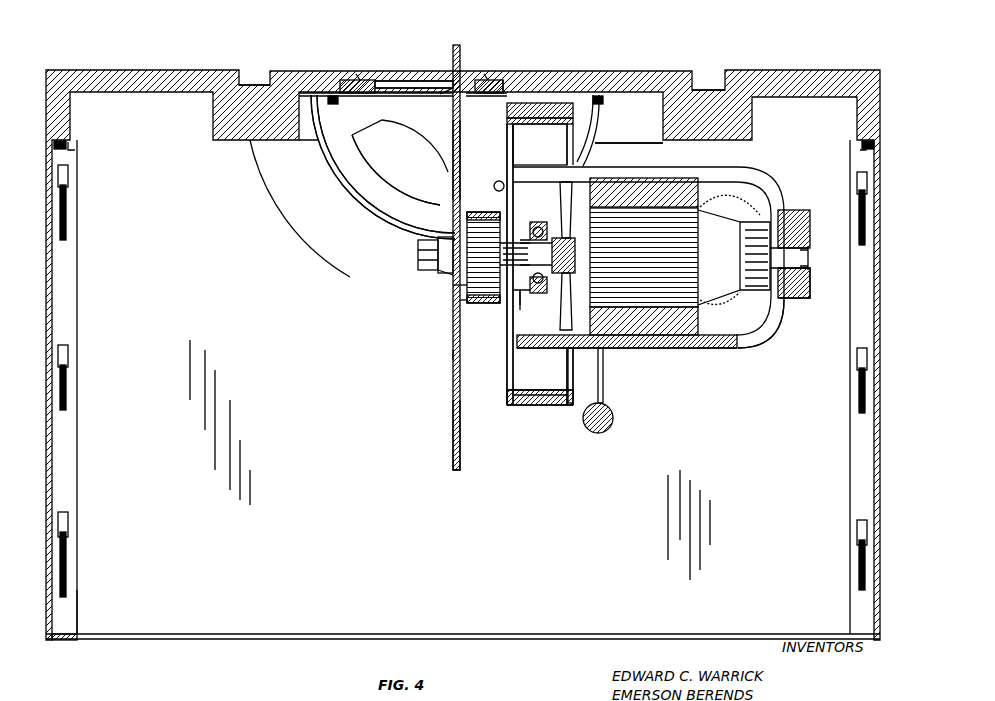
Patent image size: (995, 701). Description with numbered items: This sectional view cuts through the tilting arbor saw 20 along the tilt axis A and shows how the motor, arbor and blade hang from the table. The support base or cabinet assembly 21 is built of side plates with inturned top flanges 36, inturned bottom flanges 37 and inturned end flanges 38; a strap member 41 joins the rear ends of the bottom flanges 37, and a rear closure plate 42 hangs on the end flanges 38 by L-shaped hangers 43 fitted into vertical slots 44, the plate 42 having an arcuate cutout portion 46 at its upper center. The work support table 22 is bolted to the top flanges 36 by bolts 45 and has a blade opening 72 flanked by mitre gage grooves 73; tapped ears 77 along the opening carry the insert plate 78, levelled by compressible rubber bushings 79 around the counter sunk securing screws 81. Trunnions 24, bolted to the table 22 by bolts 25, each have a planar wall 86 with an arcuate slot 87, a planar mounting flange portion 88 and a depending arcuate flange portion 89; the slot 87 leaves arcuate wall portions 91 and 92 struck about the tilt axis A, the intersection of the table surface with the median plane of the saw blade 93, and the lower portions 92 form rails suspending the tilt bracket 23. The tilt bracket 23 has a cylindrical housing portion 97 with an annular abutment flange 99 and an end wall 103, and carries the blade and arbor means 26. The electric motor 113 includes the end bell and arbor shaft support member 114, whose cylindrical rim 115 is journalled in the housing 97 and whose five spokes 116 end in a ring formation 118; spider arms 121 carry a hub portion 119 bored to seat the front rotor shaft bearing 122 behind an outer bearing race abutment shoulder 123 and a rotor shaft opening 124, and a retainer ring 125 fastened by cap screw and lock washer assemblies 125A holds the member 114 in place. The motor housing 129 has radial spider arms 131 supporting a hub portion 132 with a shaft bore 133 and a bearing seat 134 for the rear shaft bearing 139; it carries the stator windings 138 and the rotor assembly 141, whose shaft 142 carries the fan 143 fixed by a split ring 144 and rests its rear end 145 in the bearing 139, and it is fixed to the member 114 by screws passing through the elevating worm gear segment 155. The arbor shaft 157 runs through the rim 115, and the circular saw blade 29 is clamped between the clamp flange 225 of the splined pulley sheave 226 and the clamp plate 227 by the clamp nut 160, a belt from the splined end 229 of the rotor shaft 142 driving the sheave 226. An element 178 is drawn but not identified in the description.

The tilting arbor saw 20 is at (190, 647).
The support base or cabinet assembly 21 is at (110, 620).
The work support table 22 is at (780, 58).
The tilt bracket 23 is at (523, 412).
The trunnions 24 is at (316, 163).
The bolts 25 is at (334, 104).
The blade and arbor means 26 is at (505, 383).
The circular saw blade 29 is at (452, 354).
The inturned top flanges 36 is at (68, 146).
The inturned bottom flanges 37 is at (52, 655).
The inturned end flanges 38 is at (78, 289).
The strap member 41 is at (408, 615).
The rear closure plate 42 is at (250, 556).
The L-shaped hangers 43 is at (66, 200).
The vertical slots 44 is at (64, 184).
The bolts 45 is at (74, 150).
The arcuate cutout portion 46 is at (356, 263).
The blade opening 72 is at (502, 80).
The mitre gage groove 73 is at (240, 72).
The tapped ears 77 is at (370, 95).
The insert plate 78 is at (408, 74).
The compressible rubber bushings 79 is at (378, 78).
The securing screws 81 is at (362, 74).
The planar wall 86 is at (434, 126).
The arcuate slot 87 is at (350, 175).
The planar mounting flange portion 88 is at (446, 76).
The depending arcuate flange portion 89 is at (378, 205).
The upper arcuate wall portion 91 is at (376, 163).
The lower arcuate wall portion 92 is at (432, 205).
The saw blade 93 is at (452, 451).
The cylindrical housing portion 97 is at (540, 405).
The annular abutment flange 99 is at (507, 352).
The end wall 103 is at (452, 130).
The electric motor 113 is at (686, 350).
The motor end bell and arbor shaft support member 114 is at (508, 405).
The cylindrical rim 115 is at (540, 103).
The spokes 116 is at (513, 133).
The ring formation 118 is at (515, 165).
The hub portion 119 is at (544, 198).
The spider arms 121 is at (508, 190).
The front rotor shaft bearing 122 is at (533, 274).
The outer bearing race abutment shoulder 123 is at (533, 307).
The rotor shaft opening 124 is at (512, 318).
The retainer ring 125 is at (570, 405).
The cap screw and lock washer assemblies 125A is at (596, 101).
The motor housing 129 is at (705, 348).
The radial spider arms 131 is at (756, 175).
The hub portion 132 is at (798, 305).
The shaft bore 133 is at (806, 242).
The bearing seat 134 is at (806, 282).
The stator windings 138 is at (700, 324).
The rear shaft bearing 139 is at (790, 222).
The rotor assembly 141 is at (645, 335).
The rotor shaft 142 is at (567, 255).
The fan 143 is at (563, 172).
The split ring 144 is at (536, 257).
The rear end of shaft 145 is at (809, 268).
The elevating worm gear segment 155 is at (603, 395).
The arbor shaft 157 is at (436, 245).
The clamp nut 160 is at (417, 255).
The cable 178 is at (611, 430).
The clamp flange 225 is at (455, 320).
The splined pulley sheave 226 is at (466, 214).
The clamp plate 227 is at (438, 268).
The splined end of rotor shaft 229 is at (455, 285).
The tilt axis A is at (460, 48).